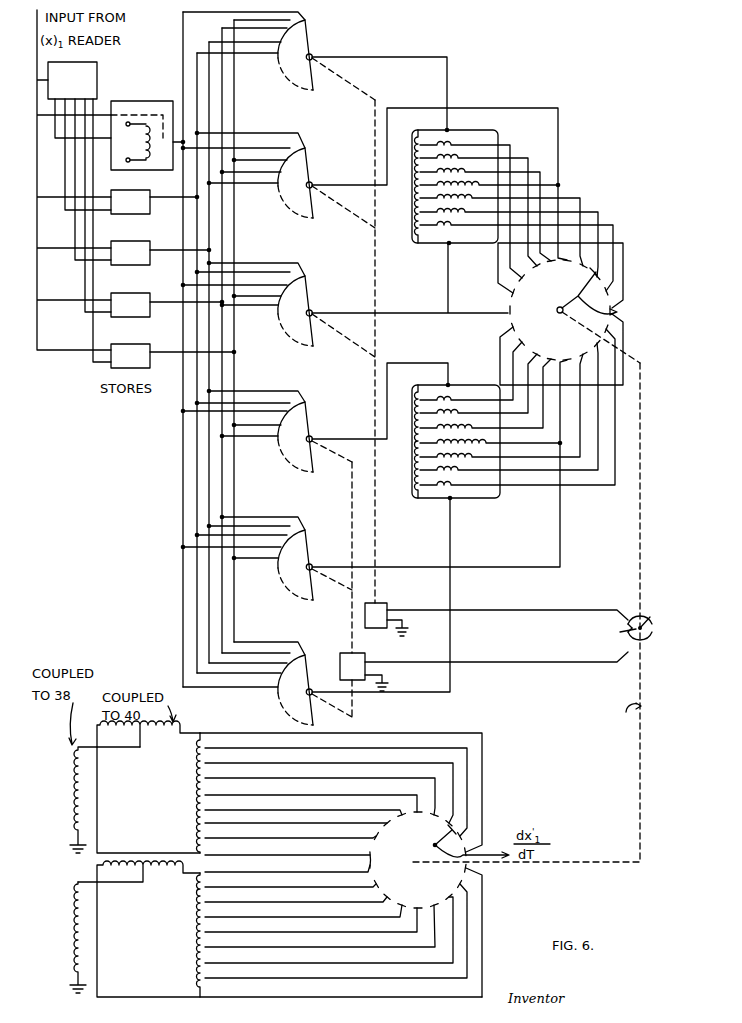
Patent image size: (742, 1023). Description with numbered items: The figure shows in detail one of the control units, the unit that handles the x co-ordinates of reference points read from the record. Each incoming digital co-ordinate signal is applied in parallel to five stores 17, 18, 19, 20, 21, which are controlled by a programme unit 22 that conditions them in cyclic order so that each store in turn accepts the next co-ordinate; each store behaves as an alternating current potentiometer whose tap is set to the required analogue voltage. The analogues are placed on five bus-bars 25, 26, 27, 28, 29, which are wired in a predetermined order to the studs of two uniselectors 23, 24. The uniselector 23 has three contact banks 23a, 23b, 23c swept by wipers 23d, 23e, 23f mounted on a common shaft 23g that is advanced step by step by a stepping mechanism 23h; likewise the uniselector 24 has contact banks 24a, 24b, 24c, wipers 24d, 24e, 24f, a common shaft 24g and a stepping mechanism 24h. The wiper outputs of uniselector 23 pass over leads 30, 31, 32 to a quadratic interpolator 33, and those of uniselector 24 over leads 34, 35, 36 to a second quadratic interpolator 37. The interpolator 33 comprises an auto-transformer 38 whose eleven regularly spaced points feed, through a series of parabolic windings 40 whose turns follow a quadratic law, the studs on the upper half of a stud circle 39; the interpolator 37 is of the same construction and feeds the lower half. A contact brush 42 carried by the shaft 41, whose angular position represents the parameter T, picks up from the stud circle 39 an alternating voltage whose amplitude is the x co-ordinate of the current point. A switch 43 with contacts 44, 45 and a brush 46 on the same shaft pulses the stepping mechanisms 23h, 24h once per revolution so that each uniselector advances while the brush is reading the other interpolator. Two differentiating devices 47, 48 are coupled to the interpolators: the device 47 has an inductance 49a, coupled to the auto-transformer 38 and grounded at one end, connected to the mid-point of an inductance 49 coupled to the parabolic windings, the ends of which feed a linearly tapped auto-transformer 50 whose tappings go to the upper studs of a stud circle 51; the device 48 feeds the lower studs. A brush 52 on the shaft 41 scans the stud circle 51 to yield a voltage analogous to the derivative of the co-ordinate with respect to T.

The store 17 is at (143, 100).
The store 18 is at (150, 203).
The store 19 is at (150, 255).
The store 20 is at (150, 308).
The store 21 is at (150, 358).
The programme unit 22 is at (98, 78).
The uniselector 23 is at (297, 307).
The contact bank 23a is at (276, 63).
The contact bank 23b is at (276, 194).
The contact bank 23c is at (278, 332).
The wiper 23d is at (313, 66).
The wiper 23e is at (313, 196).
The wiper 23f is at (313, 323).
The common shaft 23g is at (377, 292).
The stepping mechanism 23h is at (374, 603).
The uniselector 24 is at (293, 558).
The contact bank 24a is at (275, 452).
The contact bank 24b is at (275, 568).
The contact bank 24c is at (278, 698).
The wiper 24d is at (314, 449).
The wiper 24e is at (313, 556).
The wiper 24f is at (313, 673).
The common shaft 24g is at (355, 523).
The stepping mechanism 24h is at (360, 680).
The bus-bar 25 is at (183, 478).
The bus-bar 26 is at (197, 500).
The bus-bar 27 is at (209, 520).
The bus-bar 28 is at (222, 575).
The bus-bar 29 is at (234, 595).
The lead 30 is at (448, 72).
The lead 31 is at (416, 105).
The lead 32 is at (450, 298).
The quadratic interpolator 33 is at (521, 225).
The lead 34 is at (391, 362).
The lead 35 is at (560, 528).
The lead 36 is at (452, 525).
The quadratic interpolator 37 is at (517, 406).
The auto-transformer 38 is at (416, 202).
The stud circle 39 is at (575, 311).
The parabolic windings 40 is at (471, 221).
The shaft 41 is at (637, 540).
The contact brush 42 is at (556, 311).
The switch 43 is at (633, 653).
The contact 44 is at (630, 608).
The contact 45 is at (648, 645).
The brush 46 is at (645, 628).
The differentiating device 47 is at (148, 793).
The differentiating device 48 is at (276, 929).
The inductance 49 is at (181, 730).
The inductance 49a is at (72, 783).
The linearly tapped auto-transformer 50 is at (193, 788).
The stud circle 51 is at (354, 865).
The brush 52 is at (432, 848).